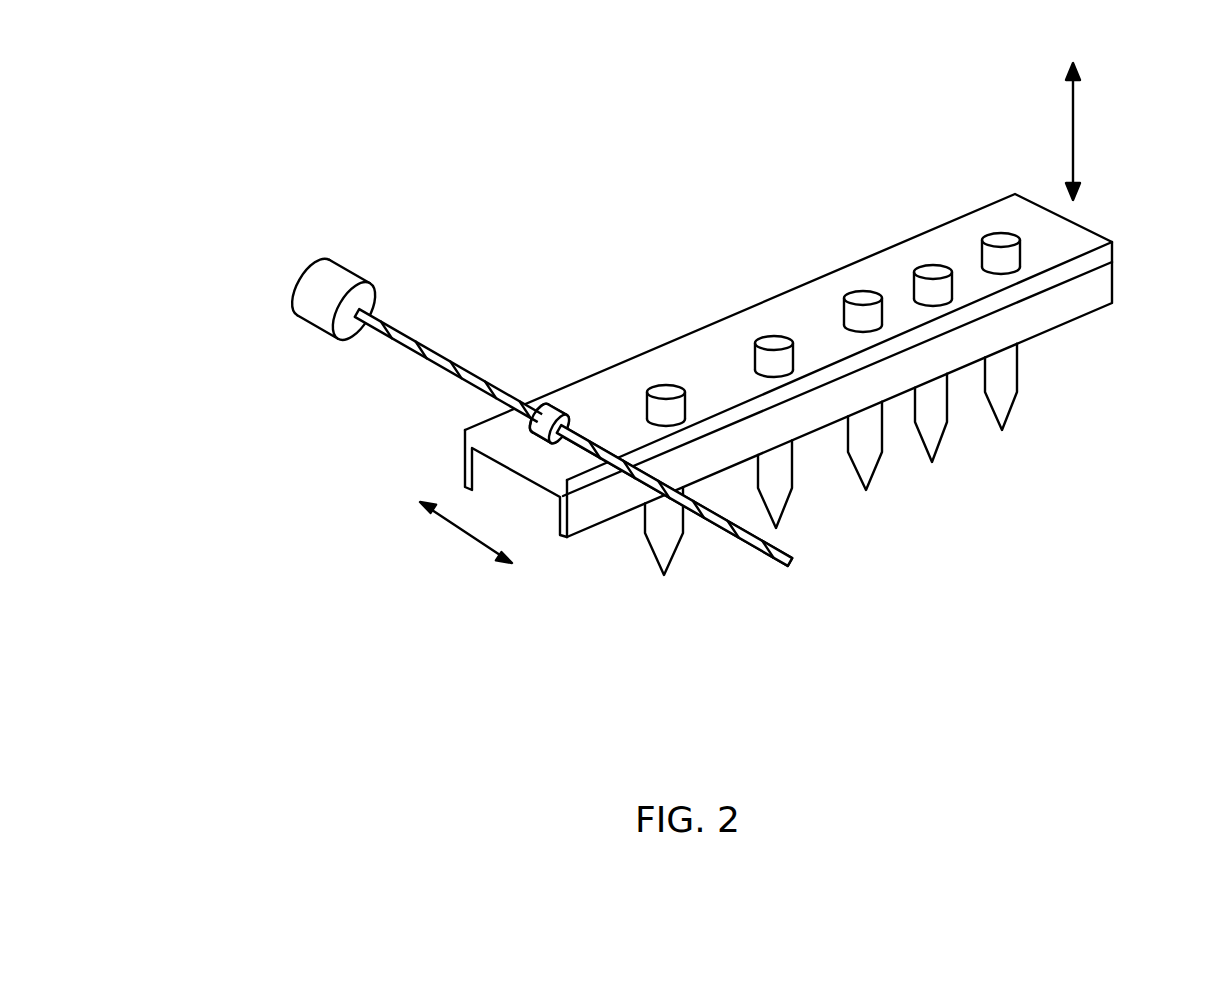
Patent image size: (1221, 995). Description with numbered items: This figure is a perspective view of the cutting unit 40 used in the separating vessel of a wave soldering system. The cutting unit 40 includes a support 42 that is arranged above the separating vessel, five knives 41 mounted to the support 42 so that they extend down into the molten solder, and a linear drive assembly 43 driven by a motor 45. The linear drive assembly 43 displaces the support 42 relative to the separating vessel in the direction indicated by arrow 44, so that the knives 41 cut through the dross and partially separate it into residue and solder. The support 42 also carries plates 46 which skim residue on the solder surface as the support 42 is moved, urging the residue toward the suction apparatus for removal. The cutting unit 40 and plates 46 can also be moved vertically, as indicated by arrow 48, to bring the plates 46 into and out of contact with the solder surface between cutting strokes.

The cutting unit 40 is at (546, 140).
The knives 41 is at (673, 557).
The support 42 is at (1012, 218).
The linear drive assembly 43 is at (424, 357).
The arrow 44 is at (448, 522).
The motor 45 is at (325, 288).
The plates 46 is at (482, 477).
The arrow 48 is at (1075, 127).